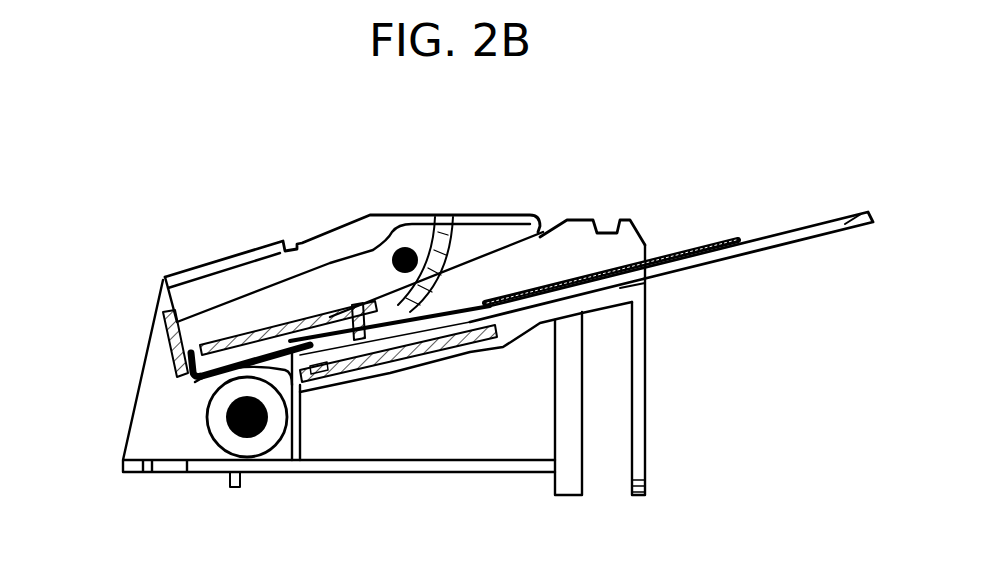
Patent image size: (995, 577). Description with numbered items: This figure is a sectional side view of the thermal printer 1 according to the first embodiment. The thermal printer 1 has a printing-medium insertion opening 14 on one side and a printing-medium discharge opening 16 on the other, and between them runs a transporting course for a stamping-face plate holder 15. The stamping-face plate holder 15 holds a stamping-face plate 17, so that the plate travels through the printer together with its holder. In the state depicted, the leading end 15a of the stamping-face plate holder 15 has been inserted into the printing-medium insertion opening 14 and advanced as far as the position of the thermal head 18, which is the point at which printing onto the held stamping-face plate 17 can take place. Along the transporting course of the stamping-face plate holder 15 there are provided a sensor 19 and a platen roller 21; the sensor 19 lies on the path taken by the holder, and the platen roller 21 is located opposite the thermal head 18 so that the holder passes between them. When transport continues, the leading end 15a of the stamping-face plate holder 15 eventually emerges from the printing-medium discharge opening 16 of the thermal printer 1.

The thermal printer 1 is at (546, 208).
The printing-medium insertion opening 14 is at (473, 299).
The stamping-face plate holder 15 is at (790, 228).
The leading end 15a is at (352, 343).
The printing-medium discharge opening 16 is at (152, 412).
The stamping-face plate 17 is at (682, 256).
The thermal head 18 is at (283, 368).
The sensor 19 is at (318, 365).
The platen roller 21 is at (214, 446).